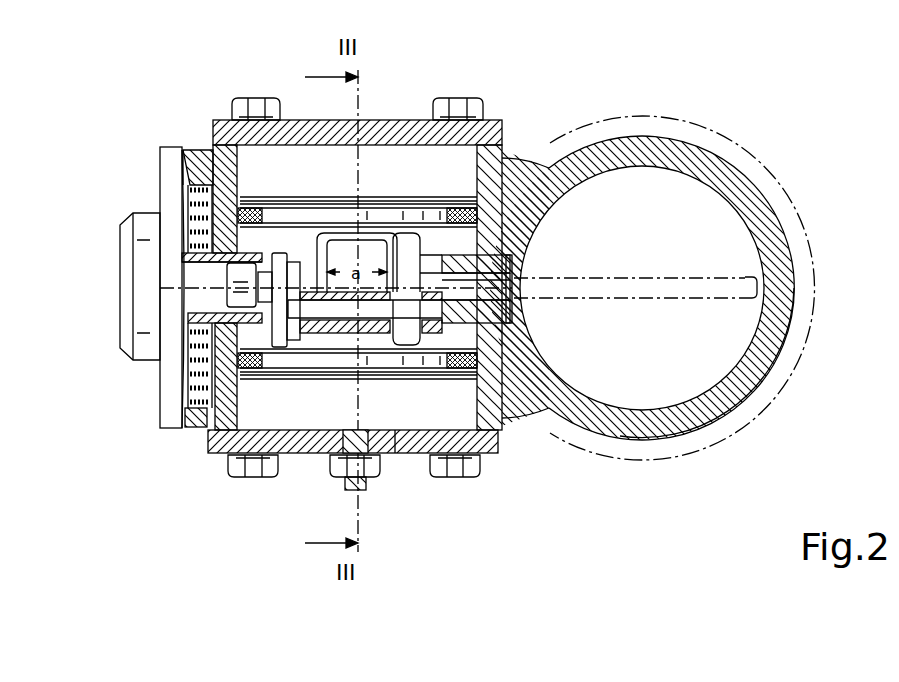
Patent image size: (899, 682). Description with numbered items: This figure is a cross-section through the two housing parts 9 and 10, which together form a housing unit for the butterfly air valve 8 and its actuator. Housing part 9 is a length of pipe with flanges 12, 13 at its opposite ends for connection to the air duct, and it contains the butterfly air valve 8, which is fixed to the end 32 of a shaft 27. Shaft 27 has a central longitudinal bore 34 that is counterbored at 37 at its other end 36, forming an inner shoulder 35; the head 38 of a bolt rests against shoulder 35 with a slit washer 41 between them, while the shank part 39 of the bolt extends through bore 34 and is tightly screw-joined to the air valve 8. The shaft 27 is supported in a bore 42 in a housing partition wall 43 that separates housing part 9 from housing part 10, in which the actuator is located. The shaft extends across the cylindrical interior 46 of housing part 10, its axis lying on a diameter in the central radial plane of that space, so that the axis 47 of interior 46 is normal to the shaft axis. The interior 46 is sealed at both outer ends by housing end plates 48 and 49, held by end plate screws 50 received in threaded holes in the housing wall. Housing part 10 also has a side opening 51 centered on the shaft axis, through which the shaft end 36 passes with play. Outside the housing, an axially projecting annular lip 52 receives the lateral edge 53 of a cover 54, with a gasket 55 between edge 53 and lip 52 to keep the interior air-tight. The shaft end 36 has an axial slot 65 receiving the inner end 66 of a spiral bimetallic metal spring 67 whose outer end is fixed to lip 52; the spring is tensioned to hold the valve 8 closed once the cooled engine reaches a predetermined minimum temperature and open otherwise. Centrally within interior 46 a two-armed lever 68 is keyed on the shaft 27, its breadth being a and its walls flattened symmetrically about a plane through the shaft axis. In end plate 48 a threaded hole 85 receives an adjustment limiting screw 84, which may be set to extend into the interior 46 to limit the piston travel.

The butterfly air valve 8 is at (649, 281).
The housing part 9 is at (812, 260).
The housing part 10 is at (450, 101).
The flange 12 is at (785, 334).
The flange 13 is at (834, 313).
The shaft 27 is at (447, 267).
The end of shaft 32 is at (510, 307).
The central longitudinal bore 34 is at (507, 325).
The inner shoulder 35 is at (268, 305).
The other end of shaft 36 is at (279, 330).
The counterbore 37 is at (228, 300).
The bolt head 38 is at (258, 302).
The shank part of bolt / shaft axis 39 is at (508, 278).
The slit washer 41 is at (222, 315).
The bore 42 is at (513, 258).
The housing partition wall 43 is at (538, 180).
The cylindrical interior 46 is at (489, 454).
The axis of cylindrical interior 47 is at (395, 437).
The housing end plate 48 is at (293, 445).
The housing end plate 49 is at (397, 122).
The end plate screws 50 is at (245, 477).
The side opening 51 is at (220, 333).
The annular lip 52 is at (212, 178).
The lateral edge of cover 53 is at (210, 162).
The cover 54 is at (133, 284).
The gasket 55 is at (222, 150).
The axial slot 65 is at (200, 240).
The inner end of spring 66 is at (212, 254).
The spiral metal spring 67 is at (183, 430).
The two-armed lever 68 is at (372, 322).
The adjustment limiting screw 84 is at (371, 488).
The threaded hole 85 is at (388, 455).